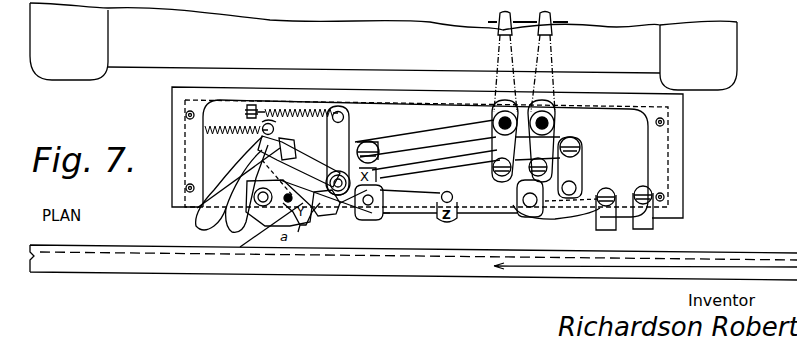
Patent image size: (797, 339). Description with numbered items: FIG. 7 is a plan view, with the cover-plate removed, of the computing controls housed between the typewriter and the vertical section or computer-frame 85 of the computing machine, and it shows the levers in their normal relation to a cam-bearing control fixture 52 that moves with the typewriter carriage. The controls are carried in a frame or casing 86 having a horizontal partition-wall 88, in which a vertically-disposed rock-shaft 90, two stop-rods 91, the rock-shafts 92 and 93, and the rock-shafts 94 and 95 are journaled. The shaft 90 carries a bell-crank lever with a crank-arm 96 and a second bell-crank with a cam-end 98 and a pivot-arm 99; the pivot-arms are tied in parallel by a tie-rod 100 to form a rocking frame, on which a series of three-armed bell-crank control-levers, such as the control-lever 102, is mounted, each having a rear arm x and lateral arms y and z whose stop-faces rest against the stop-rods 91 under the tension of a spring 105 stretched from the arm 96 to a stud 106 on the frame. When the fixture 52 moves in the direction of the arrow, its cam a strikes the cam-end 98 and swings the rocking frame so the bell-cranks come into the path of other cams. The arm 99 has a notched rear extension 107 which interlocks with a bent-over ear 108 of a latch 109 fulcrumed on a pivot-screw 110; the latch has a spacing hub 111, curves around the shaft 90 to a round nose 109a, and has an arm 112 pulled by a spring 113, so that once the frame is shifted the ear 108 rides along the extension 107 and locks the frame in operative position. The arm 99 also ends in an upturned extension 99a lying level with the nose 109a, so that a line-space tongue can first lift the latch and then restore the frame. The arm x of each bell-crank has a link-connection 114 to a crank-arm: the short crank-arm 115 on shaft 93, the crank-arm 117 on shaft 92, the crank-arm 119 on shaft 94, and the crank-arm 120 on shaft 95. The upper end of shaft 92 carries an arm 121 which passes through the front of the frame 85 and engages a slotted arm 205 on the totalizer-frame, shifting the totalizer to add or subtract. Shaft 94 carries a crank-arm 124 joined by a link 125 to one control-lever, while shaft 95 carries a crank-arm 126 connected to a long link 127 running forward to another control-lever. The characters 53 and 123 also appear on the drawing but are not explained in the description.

The computer-frame 85 is at (383, 46).
The arm 205 is at (540, 21).
The arm 121 is at (499, 62).
The pin path line 123 is at (548, 60).
The frame 86 is at (160, 106).
The stud 106 is at (189, 125).
The partition-wall 88 is at (425, 158).
The spring 105 is at (271, 121).
The spring 113 is at (312, 108).
The arm 112 is at (345, 118).
The spacing hub 111 is at (339, 173).
The bent-over ear 108 is at (275, 130).
The rear extension 107 is at (296, 150).
The crank-arm 96 is at (261, 150).
The cam-end 98 is at (195, 226).
The rock-shaft 90 is at (240, 222).
The round nose 109a is at (231, 232).
The latch 109 is at (309, 195).
The stop-rods 91 is at (453, 199).
The pivot-screw 110 is at (308, 219).
The tie-rod 100 is at (330, 216).
The pivot-arm 99 is at (380, 188).
The extension 99a is at (376, 221).
The link-connection 114 is at (397, 152).
The crank-arm 117 is at (490, 148).
The rock-shaft 92 is at (493, 123).
The rock-shaft 93 is at (554, 123).
The crank-arm 119 is at (512, 172).
The rock-shaft 94 is at (527, 218).
The bell-crank control-lever 102 is at (448, 201).
The guide 53 is at (418, 242).
The crank-arm 120 is at (583, 174).
The crank-arm 115 is at (581, 156).
The crank-arm 124 is at (552, 219).
The rock-shaft 95 is at (574, 200).
The crank-arm 126 is at (626, 188).
The link 125 is at (606, 230).
The long link 127 is at (653, 226).
The control fixture 52 is at (185, 294).